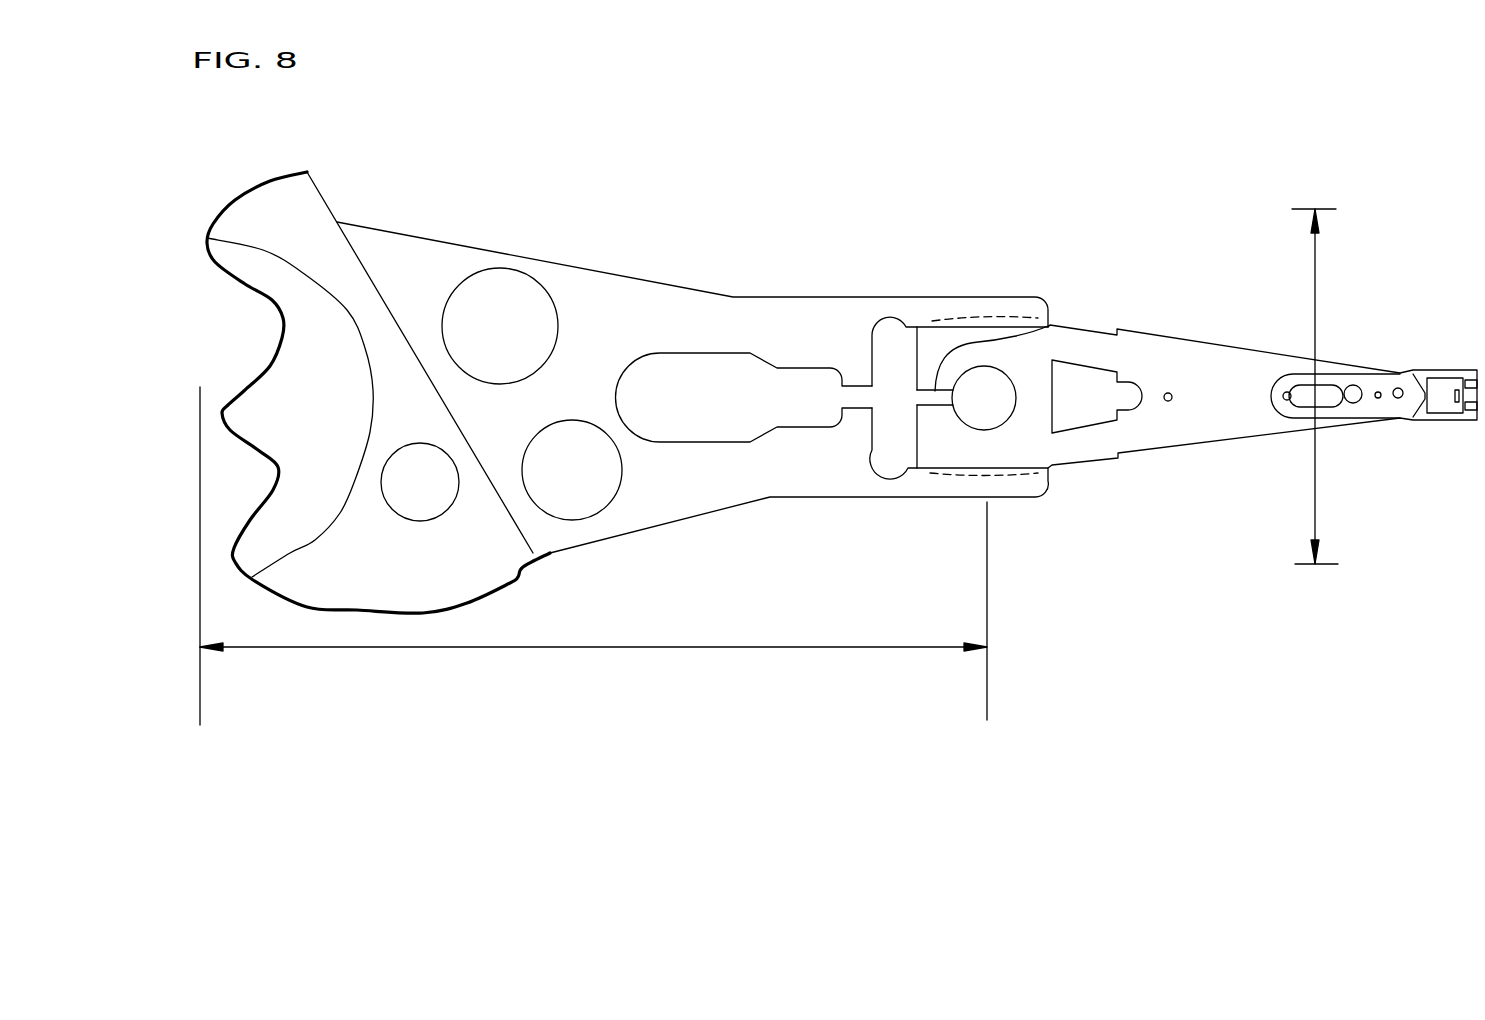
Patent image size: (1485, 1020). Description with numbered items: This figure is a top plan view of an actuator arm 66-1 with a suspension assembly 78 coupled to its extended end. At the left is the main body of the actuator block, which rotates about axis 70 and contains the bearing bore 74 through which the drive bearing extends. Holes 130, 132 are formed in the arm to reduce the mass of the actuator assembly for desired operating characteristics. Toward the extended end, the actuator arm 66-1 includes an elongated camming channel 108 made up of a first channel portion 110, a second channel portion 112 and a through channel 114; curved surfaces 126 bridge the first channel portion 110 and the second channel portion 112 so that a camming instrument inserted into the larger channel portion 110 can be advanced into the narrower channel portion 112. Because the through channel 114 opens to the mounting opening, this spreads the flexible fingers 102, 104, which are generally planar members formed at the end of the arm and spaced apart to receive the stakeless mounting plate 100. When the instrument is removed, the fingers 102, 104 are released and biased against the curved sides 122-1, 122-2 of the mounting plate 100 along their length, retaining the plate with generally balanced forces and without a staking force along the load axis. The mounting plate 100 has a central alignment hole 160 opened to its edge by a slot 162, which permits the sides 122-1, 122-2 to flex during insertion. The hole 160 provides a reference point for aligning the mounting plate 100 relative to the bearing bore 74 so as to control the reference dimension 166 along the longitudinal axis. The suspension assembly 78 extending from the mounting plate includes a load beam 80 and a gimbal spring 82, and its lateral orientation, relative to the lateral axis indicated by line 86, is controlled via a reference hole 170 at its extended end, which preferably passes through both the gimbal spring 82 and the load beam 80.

The axis 70 is at (222, 412).
The bearing bore 74 is at (303, 273).
The hole 130 is at (547, 290).
The hole 132 is at (577, 493).
The actuator arm 66-1 is at (780, 283).
The elongated camming channel 108 is at (688, 352).
The first channel portion 110 is at (678, 410).
The second channel portion 112 is at (783, 410).
The through channel 114 is at (858, 403).
The curved surfaces 126 is at (843, 386).
The flexible finger 102 is at (932, 307).
The flexible finger 104 is at (962, 488).
The side 122-1 is at (975, 318).
The side 122-2 is at (985, 475).
The stakeless mounting plate 100 is at (1037, 458).
The central alignment hole 160 is at (1008, 375).
The slot 162 is at (1020, 335).
The suspension assembly 78 is at (1203, 338).
The load beam 80 is at (1226, 410).
The gimbal spring 82 is at (1360, 374).
The reference hole 170 is at (1323, 400).
The lateral axis 86 is at (1315, 275).
The reference dimension 166 is at (668, 647).